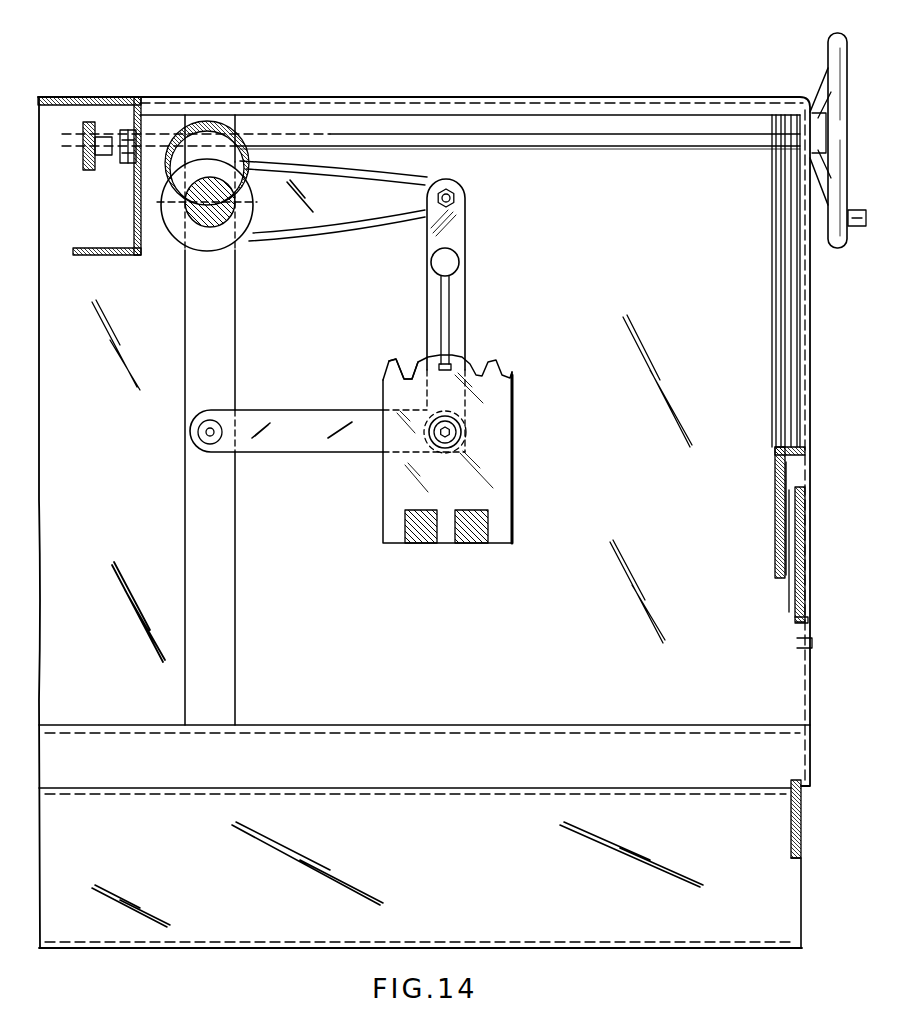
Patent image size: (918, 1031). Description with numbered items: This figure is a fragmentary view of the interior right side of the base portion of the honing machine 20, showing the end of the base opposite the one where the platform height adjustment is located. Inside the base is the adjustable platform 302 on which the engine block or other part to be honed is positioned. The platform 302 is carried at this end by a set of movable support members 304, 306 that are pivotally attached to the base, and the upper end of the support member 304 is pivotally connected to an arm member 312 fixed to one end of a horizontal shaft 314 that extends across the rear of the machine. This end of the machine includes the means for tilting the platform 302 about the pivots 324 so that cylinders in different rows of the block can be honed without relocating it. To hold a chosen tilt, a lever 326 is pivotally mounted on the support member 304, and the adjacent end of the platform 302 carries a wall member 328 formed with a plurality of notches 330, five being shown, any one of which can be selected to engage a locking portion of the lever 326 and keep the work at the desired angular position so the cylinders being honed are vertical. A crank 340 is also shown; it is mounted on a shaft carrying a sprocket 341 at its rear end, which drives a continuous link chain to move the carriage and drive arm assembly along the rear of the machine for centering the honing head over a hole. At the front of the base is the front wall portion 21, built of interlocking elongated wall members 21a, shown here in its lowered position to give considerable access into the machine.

The honing machine 20 is at (817, 682).
The front wall portion 21 is at (793, 476).
The interlocking elongated wall members 21a is at (787, 535).
The adjustable platform 302 is at (465, 547).
The support member 304 is at (467, 293).
The lower horizontal support member 306 is at (318, 443).
The arm member 312 is at (341, 230).
The horizontal shaft 314 is at (207, 220).
The pivots 324 is at (453, 433).
The lever 326 is at (442, 318).
The wall member 328 is at (503, 409).
The notches 330 is at (413, 373).
The crank 340 is at (830, 43).
The sprocket 341 is at (102, 168).